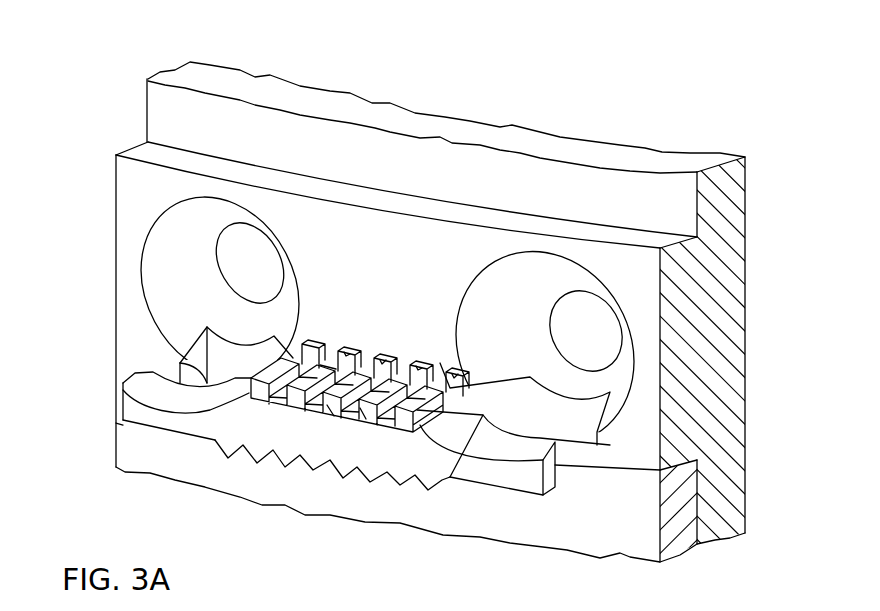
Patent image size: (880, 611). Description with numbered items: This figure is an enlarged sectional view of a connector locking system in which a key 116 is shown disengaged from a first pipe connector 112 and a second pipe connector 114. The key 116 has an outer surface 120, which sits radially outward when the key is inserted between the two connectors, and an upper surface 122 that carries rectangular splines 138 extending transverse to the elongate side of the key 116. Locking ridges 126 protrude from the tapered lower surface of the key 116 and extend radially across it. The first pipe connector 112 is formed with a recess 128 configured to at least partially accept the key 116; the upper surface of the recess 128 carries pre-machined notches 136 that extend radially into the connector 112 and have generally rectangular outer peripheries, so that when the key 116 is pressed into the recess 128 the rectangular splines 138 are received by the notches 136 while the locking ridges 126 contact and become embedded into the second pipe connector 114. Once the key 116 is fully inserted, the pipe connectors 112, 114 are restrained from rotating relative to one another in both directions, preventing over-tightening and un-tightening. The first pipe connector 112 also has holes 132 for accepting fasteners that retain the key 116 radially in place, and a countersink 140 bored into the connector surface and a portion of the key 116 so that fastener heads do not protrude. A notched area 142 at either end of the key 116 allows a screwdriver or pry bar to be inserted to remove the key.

The first pipe connector 112 is at (123, 183).
The second pipe connector 114 is at (160, 403).
The key 116 is at (300, 448).
The outer surface 120 is at (410, 453).
The upper surface 122 is at (327, 362).
The locking ridges 126 is at (243, 443).
The recess 128 is at (582, 415).
The holes 132 is at (227, 253).
The notches 136 is at (381, 360).
The rectangular splines 138 is at (360, 408).
The countersink 140 is at (153, 278).
The notched area 142 is at (180, 362).